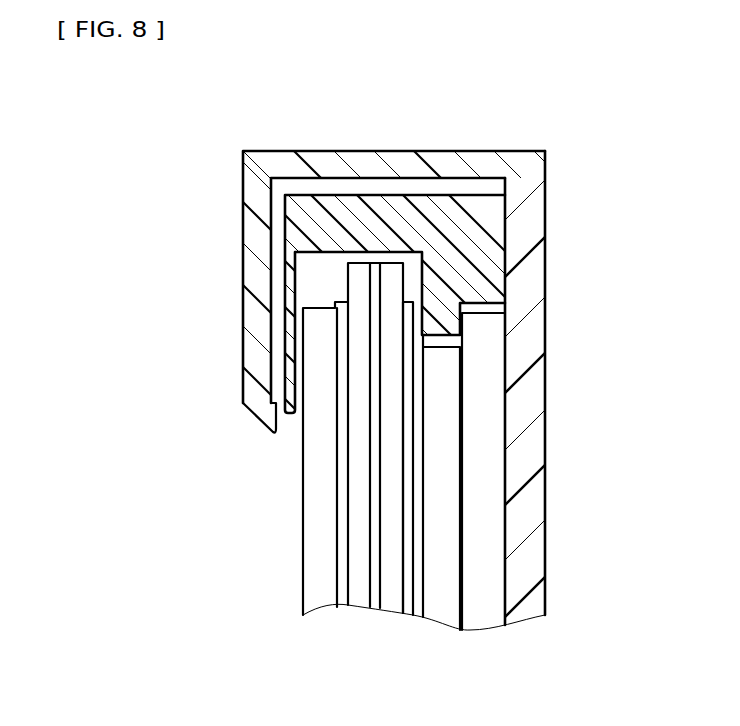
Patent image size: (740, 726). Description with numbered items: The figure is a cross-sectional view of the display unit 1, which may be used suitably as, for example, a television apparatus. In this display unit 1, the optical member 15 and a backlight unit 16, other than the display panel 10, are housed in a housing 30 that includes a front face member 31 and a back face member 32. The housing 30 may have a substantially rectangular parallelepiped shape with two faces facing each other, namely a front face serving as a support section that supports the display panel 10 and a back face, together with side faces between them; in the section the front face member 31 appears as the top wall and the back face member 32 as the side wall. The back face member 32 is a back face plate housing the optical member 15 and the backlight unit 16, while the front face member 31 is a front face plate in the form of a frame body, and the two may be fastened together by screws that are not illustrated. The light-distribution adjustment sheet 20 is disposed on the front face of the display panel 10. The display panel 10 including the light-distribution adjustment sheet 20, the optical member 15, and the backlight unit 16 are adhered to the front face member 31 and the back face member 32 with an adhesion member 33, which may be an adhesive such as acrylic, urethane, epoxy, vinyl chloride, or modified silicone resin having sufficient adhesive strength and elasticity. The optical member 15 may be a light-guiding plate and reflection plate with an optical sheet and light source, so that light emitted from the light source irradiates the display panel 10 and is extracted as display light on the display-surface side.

The display unit 1 is at (564, 121).
The display panel 10 is at (337, 612).
The optical member 15 is at (488, 466).
The backlight unit 16 is at (445, 518).
The light-distribution adjustment sheet 20 is at (320, 598).
The housing 30 is at (613, 148).
The front face member 31 is at (527, 158).
The back face member 32 is at (533, 338).
The adhesion member 33 is at (490, 248).